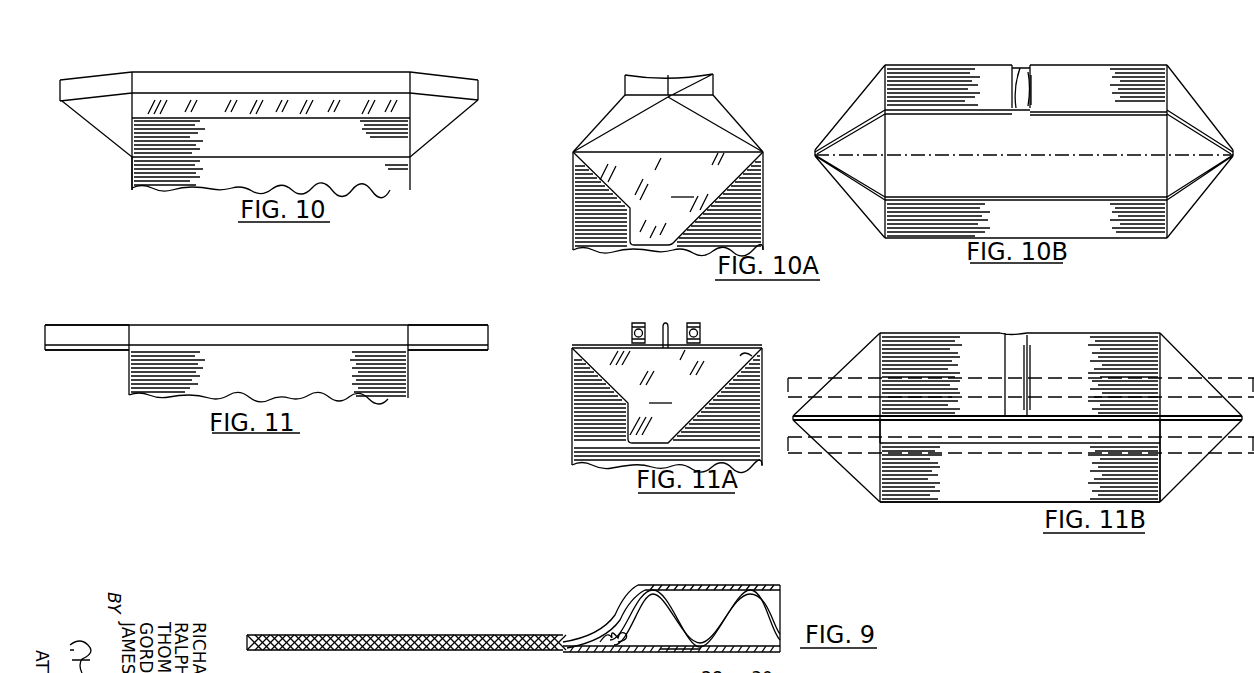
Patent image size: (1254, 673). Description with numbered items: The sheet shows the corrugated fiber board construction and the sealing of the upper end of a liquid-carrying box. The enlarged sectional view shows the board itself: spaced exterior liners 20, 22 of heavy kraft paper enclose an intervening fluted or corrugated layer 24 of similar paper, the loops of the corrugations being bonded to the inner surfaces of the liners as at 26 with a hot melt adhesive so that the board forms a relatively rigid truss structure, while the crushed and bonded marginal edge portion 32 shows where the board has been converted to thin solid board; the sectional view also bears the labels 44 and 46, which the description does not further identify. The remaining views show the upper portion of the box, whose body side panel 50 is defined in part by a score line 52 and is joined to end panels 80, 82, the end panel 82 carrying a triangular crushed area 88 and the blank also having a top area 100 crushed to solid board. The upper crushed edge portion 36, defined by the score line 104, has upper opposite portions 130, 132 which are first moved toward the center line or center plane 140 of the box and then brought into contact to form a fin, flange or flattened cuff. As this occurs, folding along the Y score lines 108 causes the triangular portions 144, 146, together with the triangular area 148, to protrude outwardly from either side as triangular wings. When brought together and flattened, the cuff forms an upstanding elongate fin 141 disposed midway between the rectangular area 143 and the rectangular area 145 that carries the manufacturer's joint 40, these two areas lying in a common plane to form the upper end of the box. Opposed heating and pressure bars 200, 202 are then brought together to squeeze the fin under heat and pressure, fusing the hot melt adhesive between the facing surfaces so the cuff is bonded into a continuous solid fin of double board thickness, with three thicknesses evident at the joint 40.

In FIG. 9, the exterior liner 20 is at (695, 585).
In FIG. 9, the exterior liner 22 is at (603, 653).
In FIG. 9, the fluted or corrugated layer 24 is at (780, 617).
In FIG. 9, the bonded loops of corrugations 26 is at (653, 590).
In FIG. 9, the crushed and bonded marginal edge portion 32 is at (400, 640).
In FIG. 10, the upper crushed edge portion 36 is at (193, 78).
In FIG. 10B, the upper crushed edge portion 36 is at (1067, 108).
In FIG. 11B, the upper crushed edge portion 36 is at (1047, 417).
In FIG. 10B, the manufacturer's joint 40 is at (1018, 100).
In FIG. 9, the bottom liner portion 44 is at (670, 652).
In FIG. 9, the outer wall 46 is at (638, 587).
In FIG. 10, the body side panel 50 is at (363, 178).
In FIG. 11B, the score line 52 is at (983, 503).
In FIG. 11, the end panel 80 is at (127, 383).
In FIG. 10A, the end panel 82 is at (593, 217).
In FIG. 11, the end panel 82 is at (410, 390).
In FIG. 11A, the end panel 82 is at (600, 402).
In FIG. 10A, the triangular crushed area 88 is at (668, 198).
In FIG. 11A, the triangular crushed area 88 is at (667, 395).
In FIG. 10, the top area 100 is at (333, 100).
In FIG. 11B, the top area 100 is at (1060, 428).
In FIG. 10, the score line 104 is at (273, 93).
In FIG. 10A, the score line 104 is at (698, 87).
In FIG. 10, the Y score lines 108 is at (67, 107).
In FIG. 10A, the Y score lines 108 is at (667, 97).
In FIG. 10A, the upper opposite portion 130 is at (687, 78).
In FIG. 10B, the upper opposite portion 130 is at (1105, 112).
In FIG. 10A, the upper opposite portion 132 is at (640, 78).
In FIG. 10B, the upper opposite portion 132 is at (1103, 195).
In FIG. 10B, the center line or center plane 140 is at (817, 183).
In FIG. 11, the upstanding elongate fin 141 is at (310, 323).
In FIG. 11A, the upstanding elongate fin 141 is at (665, 323).
In FIG. 11B, the upstanding elongate fin 141 is at (960, 420).
In FIG. 11B, the rectangular area 143 is at (957, 485).
In FIG. 10, the triangular portion 144 is at (92, 113).
In FIG. 10A, the triangular portion 144 is at (708, 108).
In FIG. 10B, the triangular portion 144 is at (1190, 110).
In FIG. 11, the triangular portion 144 is at (82, 345).
In FIG. 11A, the triangular portion 144 is at (718, 347).
In FIG. 11B, the triangular portion 144 is at (1170, 363).
In FIG. 11B, the rectangular area 145 is at (963, 347).
In FIG. 10, the triangular portion 146 is at (443, 110).
In FIG. 10A, the triangular portion 146 is at (612, 123).
In FIG. 10B, the triangular portion 146 is at (870, 105).
In FIG. 11, the triangular portion 146 is at (443, 345).
In FIG. 11A, the triangular portion 146 is at (603, 345).
In FIG. 11B, the triangular portion 146 is at (1178, 465).
In FIG. 10, the triangular area 148 is at (113, 145).
In FIG. 10A, the triangular area 148 is at (697, 125).
In FIG. 11, the triangular area 148 is at (93, 350).
In FIG. 11A, the triangular area 148 is at (738, 355).
In FIG. 11A, the heating and pressure bar 200 is at (633, 323).
In FIG. 11B, the heating and pressure bar 200 is at (807, 378).
In FIG. 11A, the heating and pressure bar 202 is at (693, 323).
In FIG. 11B, the heating and pressure bar 202 is at (802, 453).